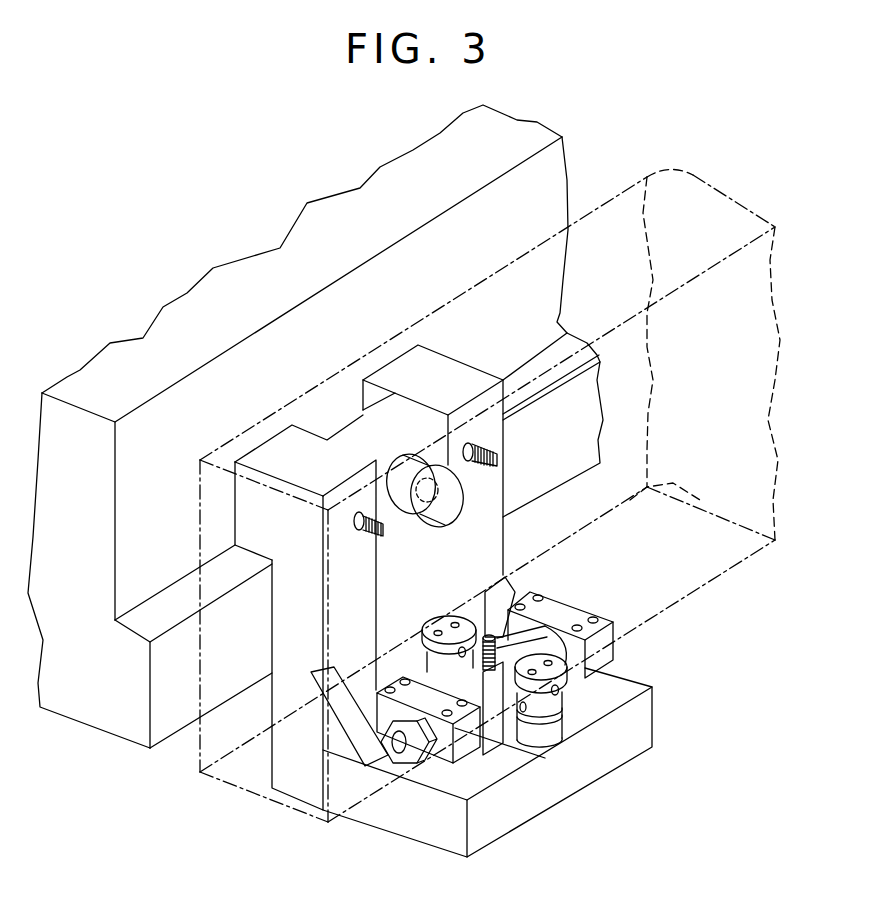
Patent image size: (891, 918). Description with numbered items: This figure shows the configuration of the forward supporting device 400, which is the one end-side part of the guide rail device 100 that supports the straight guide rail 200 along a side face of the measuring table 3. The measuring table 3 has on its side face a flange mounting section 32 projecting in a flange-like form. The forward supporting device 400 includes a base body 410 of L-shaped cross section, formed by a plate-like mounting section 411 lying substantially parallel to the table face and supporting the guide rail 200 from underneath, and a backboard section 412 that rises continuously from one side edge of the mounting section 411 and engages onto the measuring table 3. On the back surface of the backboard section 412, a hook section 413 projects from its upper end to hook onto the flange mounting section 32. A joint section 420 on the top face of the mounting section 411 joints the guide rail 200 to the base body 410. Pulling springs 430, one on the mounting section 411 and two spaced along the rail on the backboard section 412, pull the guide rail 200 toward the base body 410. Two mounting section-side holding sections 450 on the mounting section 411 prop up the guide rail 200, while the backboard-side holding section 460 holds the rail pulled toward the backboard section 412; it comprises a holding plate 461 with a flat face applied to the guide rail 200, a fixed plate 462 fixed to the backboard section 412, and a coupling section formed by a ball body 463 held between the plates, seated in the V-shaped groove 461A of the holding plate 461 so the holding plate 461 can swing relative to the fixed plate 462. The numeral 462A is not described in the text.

The measuring table 3 is at (530, 118).
The flange mounting section 32 is at (145, 623).
The guide rail device 100 is at (732, 164).
The guide rail 200 is at (760, 328).
The forward supporting device 400 is at (446, 563).
The base body 410 is at (347, 676).
The mounting section 411 is at (390, 815).
The backboard section 412 is at (272, 757).
The hook section 413 is at (237, 497).
The joint section 420 is at (640, 657).
The pulling spring 430 is at (365, 537).
The mounting section-side holding section 450 is at (430, 618).
The backboard-side holding section 460 is at (424, 432).
The holding plate 461 is at (431, 518).
The V-shaped groove 461A is at (417, 467).
The fixed plate 462 is at (401, 492).
The roller flange 462A is at (398, 492).
The ball body 463 is at (395, 440).